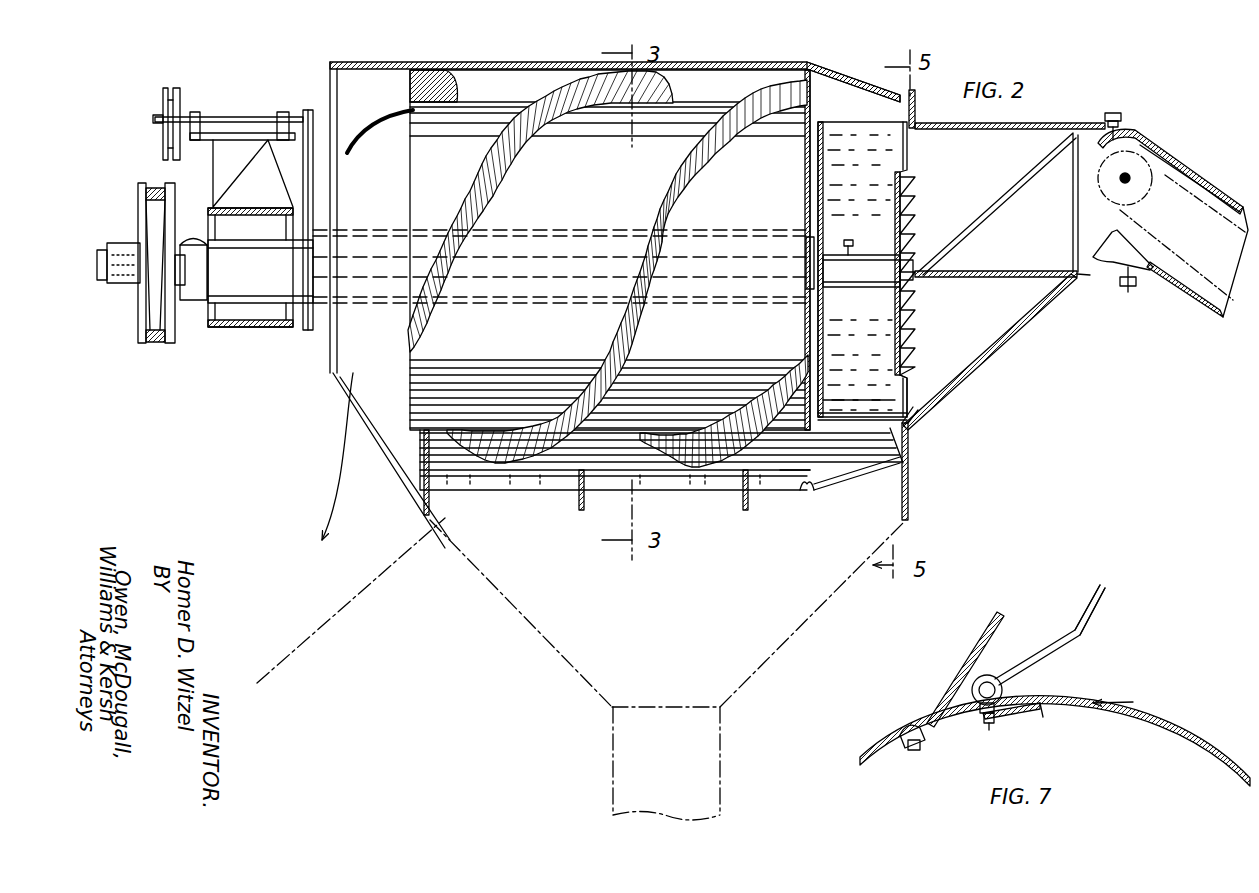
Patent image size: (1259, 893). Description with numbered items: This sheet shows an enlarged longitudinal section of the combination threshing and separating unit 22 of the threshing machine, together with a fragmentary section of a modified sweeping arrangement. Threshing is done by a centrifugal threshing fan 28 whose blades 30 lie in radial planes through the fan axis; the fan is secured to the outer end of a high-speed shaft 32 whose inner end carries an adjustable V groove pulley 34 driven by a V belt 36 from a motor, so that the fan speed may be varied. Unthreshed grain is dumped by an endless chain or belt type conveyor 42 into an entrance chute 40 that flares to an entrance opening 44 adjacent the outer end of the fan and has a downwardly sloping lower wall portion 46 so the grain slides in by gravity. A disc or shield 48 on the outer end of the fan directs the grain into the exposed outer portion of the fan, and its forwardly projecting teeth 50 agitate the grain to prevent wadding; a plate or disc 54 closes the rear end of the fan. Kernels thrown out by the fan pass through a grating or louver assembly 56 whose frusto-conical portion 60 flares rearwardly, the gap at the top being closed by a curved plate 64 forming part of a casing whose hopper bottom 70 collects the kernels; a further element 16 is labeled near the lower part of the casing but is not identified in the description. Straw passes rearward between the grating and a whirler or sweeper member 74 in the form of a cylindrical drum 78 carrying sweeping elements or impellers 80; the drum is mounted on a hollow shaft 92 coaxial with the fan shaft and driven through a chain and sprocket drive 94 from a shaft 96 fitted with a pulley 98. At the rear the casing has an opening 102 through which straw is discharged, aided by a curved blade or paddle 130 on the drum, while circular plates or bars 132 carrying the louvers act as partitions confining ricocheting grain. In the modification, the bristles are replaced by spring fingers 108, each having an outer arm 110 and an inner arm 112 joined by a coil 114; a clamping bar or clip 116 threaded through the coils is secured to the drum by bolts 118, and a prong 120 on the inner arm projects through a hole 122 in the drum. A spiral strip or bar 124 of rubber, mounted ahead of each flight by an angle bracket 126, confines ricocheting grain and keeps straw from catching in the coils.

In FIG. 2, the hopper 16 is at (677, 500).
In FIG. 2, the combination threshing and separating unit 22 is at (922, 114).
In FIG. 2, the centrifugal threshing fan 28 is at (873, 411).
In FIG. 2, the blades 30 is at (880, 152).
In FIG. 2, the shaft 32 is at (180, 283).
In FIG. 2, the adjustable V groove pulley 34 is at (140, 317).
In FIG. 2, the V belt 36 is at (152, 188).
In FIG. 2, the entrance chute 40 is at (1007, 297).
In FIG. 2, the endless chain or belt type conveyor 42 is at (1203, 190).
In FIG. 2, the entrance opening 44 is at (917, 392).
In FIG. 2, the downwardly sloping lower wall portion 46 is at (990, 352).
In FIG. 2, the disc or shield 48 is at (917, 203).
In FIG. 2, the teeth 50 is at (915, 337).
In FIG. 2, the plate or disc 54 is at (827, 393).
In FIG. 2, the grating or louver assembly 56 is at (805, 498).
In FIG. 2, the frusto-conical portion 60 is at (878, 480).
In FIG. 2, the curved plate 64 is at (850, 88).
In FIG. 2, the hopper bottom 70 is at (545, 652).
In FIG. 2, the whirler or sweeper member 74 is at (713, 97).
In FIG. 2, the cylindrical drum 78 is at (435, 412).
In FIG. 7, the cylindrical drum 78 is at (1160, 730).
In FIG. 2, the sweeping elements or impellers 80 is at (680, 203).
In FIG. 2, the hollow shaft 92 is at (370, 228).
In FIG. 2, the chain and sprocket drive 94 is at (310, 106).
In FIG. 2, the shaft 96 is at (228, 120).
In FIG. 2, the pulley 98 is at (173, 85).
In FIG. 2, the opening 102 is at (340, 383).
In FIG. 2, the curved blade or paddle 130 is at (365, 127).
In FIG. 2, the circular plates or bars 132 is at (440, 516).
In FIG. 7, the spring fingers 108 is at (1102, 605).
In FIG. 7, the outer arm 110 is at (1055, 645).
In FIG. 7, the inner arm 112 is at (1020, 710).
In FIG. 7, the coil 114 is at (1005, 680).
In FIG. 7, the clamping bar or clip 116 is at (975, 722).
In FIG. 7, the bolts 118 is at (995, 728).
In FIG. 7, the prong 120 is at (1043, 716).
In FIG. 7, the hole 122 is at (1050, 706).
In FIG. 7, the spiral strip or bar 124 is at (975, 638).
In FIG. 7, the angle bracket 126 is at (925, 712).